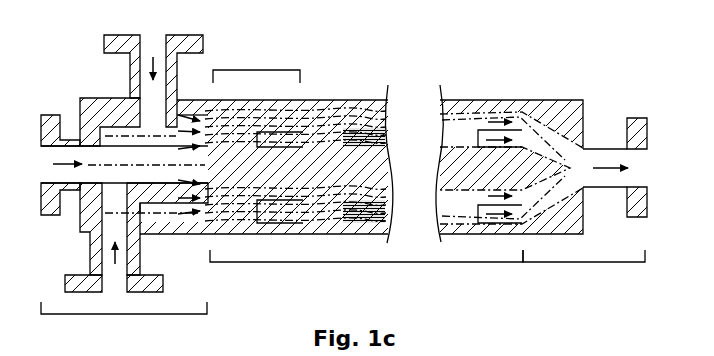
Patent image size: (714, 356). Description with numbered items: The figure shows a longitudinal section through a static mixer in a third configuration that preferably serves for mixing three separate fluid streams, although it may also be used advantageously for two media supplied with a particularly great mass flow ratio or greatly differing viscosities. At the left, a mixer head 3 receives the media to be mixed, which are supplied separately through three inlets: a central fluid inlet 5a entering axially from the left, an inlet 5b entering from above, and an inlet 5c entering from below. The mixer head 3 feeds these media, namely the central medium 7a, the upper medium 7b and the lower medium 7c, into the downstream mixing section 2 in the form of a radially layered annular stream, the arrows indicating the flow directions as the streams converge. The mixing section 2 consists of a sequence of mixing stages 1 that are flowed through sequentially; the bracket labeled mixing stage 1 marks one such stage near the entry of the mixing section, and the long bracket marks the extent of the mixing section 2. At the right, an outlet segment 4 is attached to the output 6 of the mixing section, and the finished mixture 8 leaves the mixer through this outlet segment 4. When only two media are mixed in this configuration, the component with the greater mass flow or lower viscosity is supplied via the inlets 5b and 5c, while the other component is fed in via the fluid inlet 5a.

The mixing stage 1 is at (239, 131).
The mixing section 2 is at (331, 188).
The mixer head 3 is at (124, 320).
The outlet segment 4 is at (540, 188).
The fluid inlet 5a is at (49, 165).
The inlet 5b is at (153, 71).
The inlet 5c is at (114, 277).
The output of the mixing section 6 is at (624, 167).
The medium to be mixed 7a is at (124, 164).
The medium to be mixed 7b is at (128, 122).
The medium to be mixed 7c is at (144, 229).
The mixture 8 is at (601, 168).